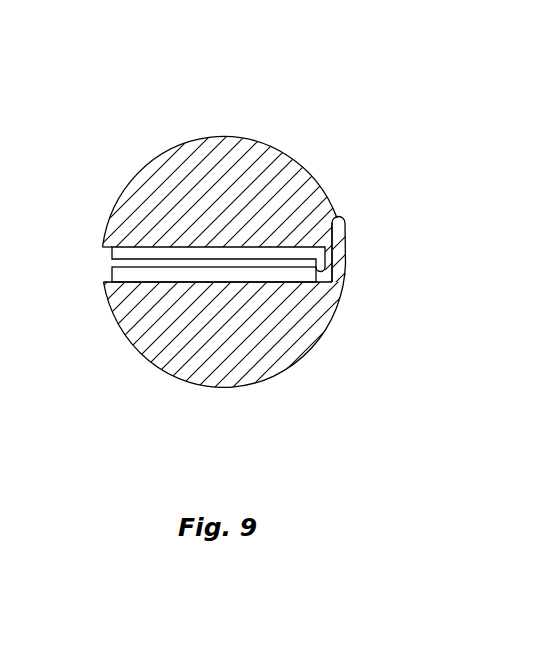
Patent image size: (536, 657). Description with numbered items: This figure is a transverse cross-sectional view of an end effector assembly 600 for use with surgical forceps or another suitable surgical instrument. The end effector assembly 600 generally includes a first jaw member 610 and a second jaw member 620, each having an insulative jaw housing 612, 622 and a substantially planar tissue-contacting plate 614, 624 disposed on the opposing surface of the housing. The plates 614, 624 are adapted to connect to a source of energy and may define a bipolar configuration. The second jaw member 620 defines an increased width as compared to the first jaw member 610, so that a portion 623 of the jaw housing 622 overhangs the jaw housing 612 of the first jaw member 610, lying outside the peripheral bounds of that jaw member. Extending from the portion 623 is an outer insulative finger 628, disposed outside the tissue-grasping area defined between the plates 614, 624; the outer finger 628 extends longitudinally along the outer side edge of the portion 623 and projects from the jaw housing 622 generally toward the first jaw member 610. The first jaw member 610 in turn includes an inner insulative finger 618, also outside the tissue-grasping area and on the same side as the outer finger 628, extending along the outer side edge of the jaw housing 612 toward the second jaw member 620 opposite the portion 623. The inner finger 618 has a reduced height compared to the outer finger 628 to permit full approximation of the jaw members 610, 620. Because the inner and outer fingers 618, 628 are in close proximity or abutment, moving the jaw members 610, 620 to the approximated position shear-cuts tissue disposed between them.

The end effector assembly 600 is at (311, 116).
The first jaw member 610 is at (300, 184).
The insulative jaw housing 612 is at (150, 177).
The tissue-contacting plate 614 is at (113, 253).
The inner insulative finger 618 is at (340, 238).
The second jaw member 620 is at (175, 409).
The insulative jaw housing 622 is at (148, 355).
The portion of jaw housing 623 is at (326, 292).
The tissue-contacting plate 624 is at (113, 274).
The outer insulative finger 628 is at (340, 262).